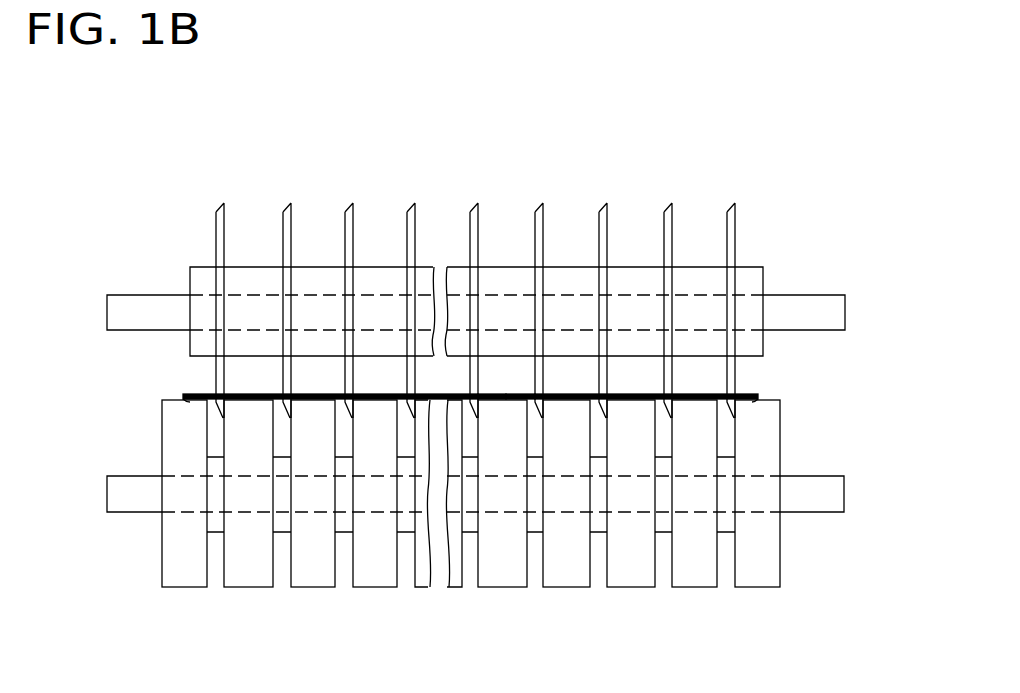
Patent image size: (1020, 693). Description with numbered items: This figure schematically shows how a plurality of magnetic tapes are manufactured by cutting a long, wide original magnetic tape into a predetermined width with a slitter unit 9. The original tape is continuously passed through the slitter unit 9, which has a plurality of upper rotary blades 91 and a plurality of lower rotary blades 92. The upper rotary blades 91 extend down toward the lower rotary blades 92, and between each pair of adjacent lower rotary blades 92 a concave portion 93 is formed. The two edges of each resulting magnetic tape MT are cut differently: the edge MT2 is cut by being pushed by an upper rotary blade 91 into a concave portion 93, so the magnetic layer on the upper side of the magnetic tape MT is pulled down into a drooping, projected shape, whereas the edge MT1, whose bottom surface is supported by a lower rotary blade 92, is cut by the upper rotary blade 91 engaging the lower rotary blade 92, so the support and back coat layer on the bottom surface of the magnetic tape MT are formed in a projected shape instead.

The slitter unit 9 is at (778, 119).
The upper rotary blades 91 is at (224, 205).
The lower rotary blades 92 is at (180, 574).
The concave portion 93 is at (285, 442).
The magnetic tape MT is at (312, 395).
The edge MT1 is at (484, 388).
The edge MT2 is at (525, 388).